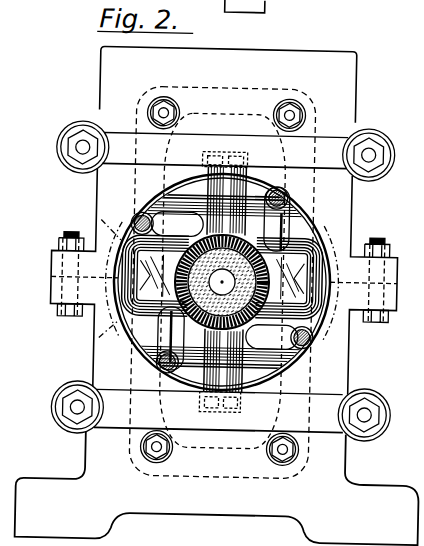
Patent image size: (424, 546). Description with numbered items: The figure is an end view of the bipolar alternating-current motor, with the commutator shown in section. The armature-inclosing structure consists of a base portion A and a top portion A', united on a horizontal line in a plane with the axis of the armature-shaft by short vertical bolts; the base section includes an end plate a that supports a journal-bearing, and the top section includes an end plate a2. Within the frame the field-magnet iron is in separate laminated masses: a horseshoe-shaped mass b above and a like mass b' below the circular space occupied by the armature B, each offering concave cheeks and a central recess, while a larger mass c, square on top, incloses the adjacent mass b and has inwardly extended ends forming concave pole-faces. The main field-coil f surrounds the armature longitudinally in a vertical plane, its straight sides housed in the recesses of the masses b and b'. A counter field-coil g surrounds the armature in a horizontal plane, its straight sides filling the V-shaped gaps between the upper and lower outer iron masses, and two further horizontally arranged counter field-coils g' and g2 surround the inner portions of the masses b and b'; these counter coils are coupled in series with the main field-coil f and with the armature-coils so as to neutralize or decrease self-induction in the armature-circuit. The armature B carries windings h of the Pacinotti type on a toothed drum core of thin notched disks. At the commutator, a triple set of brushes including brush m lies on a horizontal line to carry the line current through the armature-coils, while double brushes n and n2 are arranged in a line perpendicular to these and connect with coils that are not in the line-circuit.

The base portion A is at (218, 462).
The top portion A' is at (225, 239).
The end plate a is at (199, 303).
The end plate a2 is at (223, 266).
The main field-coil f is at (232, 280).
The field-magnet iron mass b is at (223, 196).
The field-magnet iron mass b' is at (220, 370).
The armature B is at (155, 275).
The armature windings h is at (289, 278).
The brush m is at (222, 280).
The field-magnet iron mass c is at (220, 278).
The double brush n is at (177, 224).
The double brush n2 is at (272, 337).
The counter field-coil g is at (217, 280).
The counter field-coil g' is at (223, 210).
The counter field-coil g2 is at (133, 352).